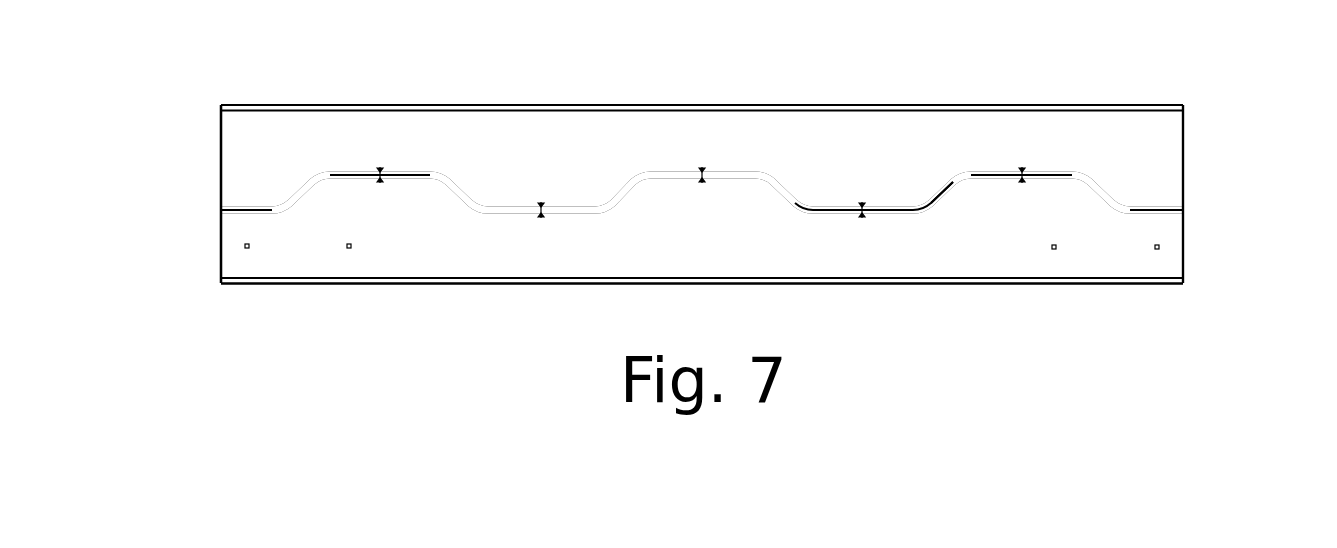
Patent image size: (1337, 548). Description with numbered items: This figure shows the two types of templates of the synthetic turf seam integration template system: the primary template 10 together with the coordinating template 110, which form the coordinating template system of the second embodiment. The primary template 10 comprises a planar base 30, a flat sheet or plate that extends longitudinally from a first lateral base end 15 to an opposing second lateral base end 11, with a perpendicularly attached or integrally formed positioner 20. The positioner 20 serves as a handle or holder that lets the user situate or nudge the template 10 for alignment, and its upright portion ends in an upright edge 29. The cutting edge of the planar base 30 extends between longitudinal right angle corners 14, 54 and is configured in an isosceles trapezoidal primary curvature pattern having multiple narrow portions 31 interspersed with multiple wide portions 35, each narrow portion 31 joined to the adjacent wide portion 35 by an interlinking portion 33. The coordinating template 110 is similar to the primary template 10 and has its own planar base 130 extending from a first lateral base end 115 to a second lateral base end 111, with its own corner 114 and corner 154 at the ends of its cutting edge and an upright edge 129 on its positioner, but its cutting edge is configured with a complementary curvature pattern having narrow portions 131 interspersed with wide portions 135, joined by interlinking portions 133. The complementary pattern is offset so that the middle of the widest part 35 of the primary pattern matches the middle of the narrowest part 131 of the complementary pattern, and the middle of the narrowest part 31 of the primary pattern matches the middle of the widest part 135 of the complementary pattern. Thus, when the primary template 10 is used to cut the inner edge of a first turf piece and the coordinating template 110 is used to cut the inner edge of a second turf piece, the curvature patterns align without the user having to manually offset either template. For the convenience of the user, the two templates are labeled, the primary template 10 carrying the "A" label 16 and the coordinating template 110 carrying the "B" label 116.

The primary template 10 is at (188, 278).
The second lateral base end 11 is at (221, 258).
The longitudinal right angle corner 14 is at (1183, 213).
The first lateral base end 15 is at (1183, 260).
The "A" label 16 is at (400, 228).
The positioner 20 is at (220, 278).
The upright edge 29 is at (897, 283).
The planar base 30 is at (213, 235).
The narrow portion 31 is at (828, 215).
The interlinking portion 33 is at (938, 203).
The wide portion 35 is at (1037, 182).
The longitudinal right angle corner 54 is at (221, 212).
The coordinating template 110 is at (186, 150).
The second lateral base end 111 is at (1183, 150).
The corner junction 114 is at (222, 207).
The first lateral base end 115 is at (221, 142).
The "B" label 116 is at (532, 159).
The top skin 129 is at (918, 108).
The planar base 130 is at (213, 180).
The narrow portion 131 is at (1035, 172).
The web junction 133 is at (937, 193).
The wide portion 135 is at (828, 207).
The end flat segment 154 is at (1183, 207).